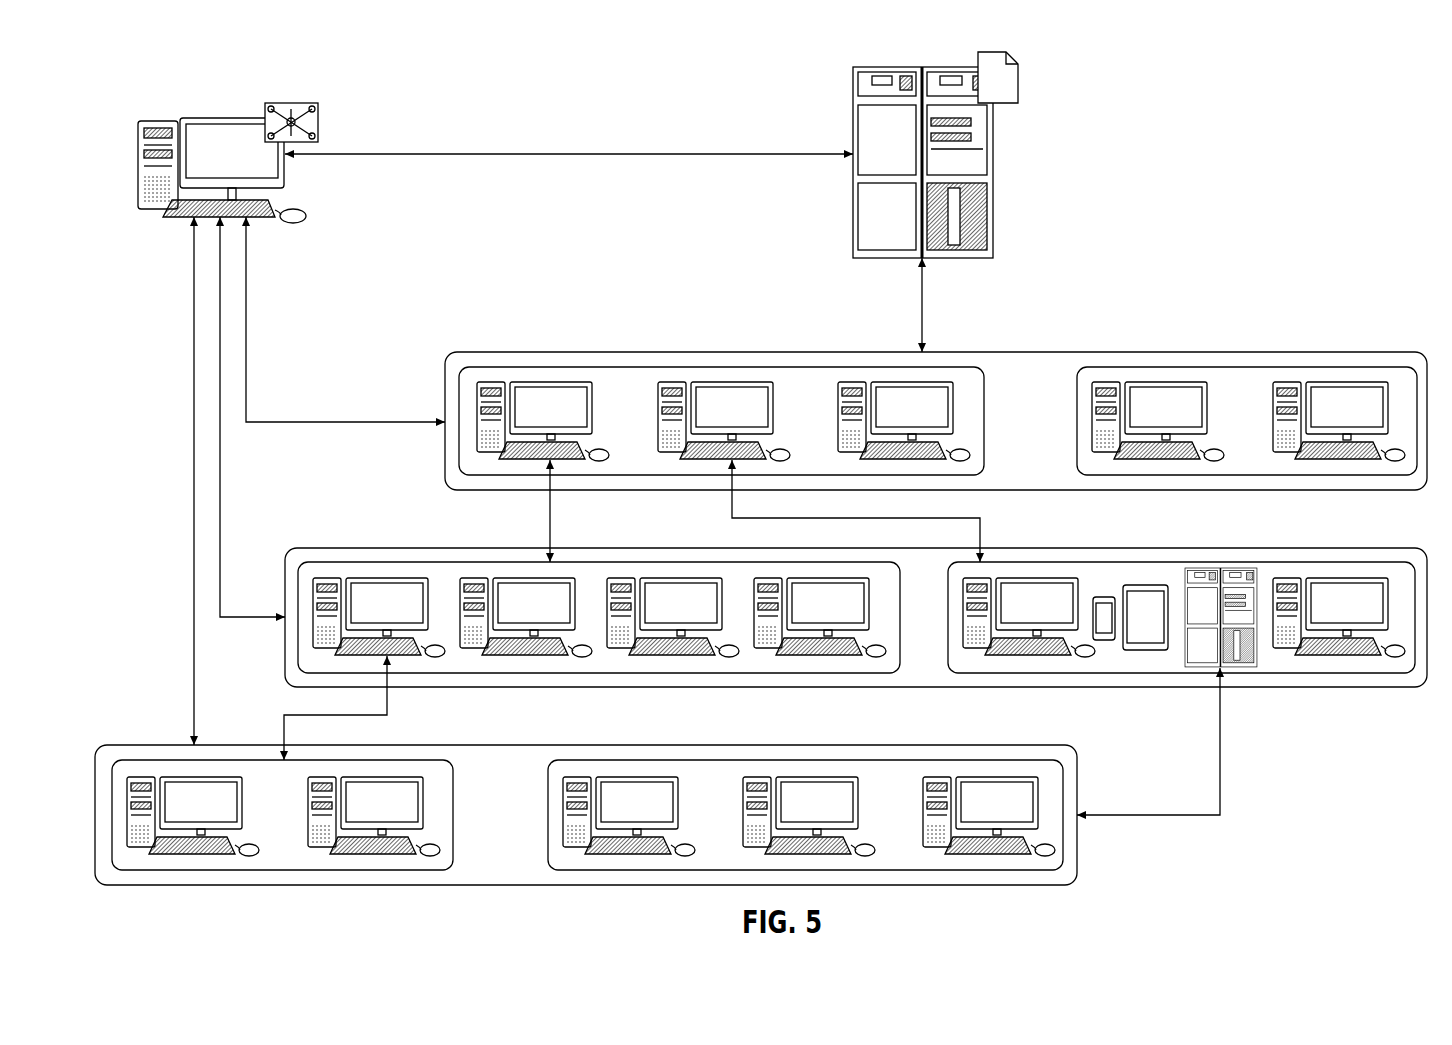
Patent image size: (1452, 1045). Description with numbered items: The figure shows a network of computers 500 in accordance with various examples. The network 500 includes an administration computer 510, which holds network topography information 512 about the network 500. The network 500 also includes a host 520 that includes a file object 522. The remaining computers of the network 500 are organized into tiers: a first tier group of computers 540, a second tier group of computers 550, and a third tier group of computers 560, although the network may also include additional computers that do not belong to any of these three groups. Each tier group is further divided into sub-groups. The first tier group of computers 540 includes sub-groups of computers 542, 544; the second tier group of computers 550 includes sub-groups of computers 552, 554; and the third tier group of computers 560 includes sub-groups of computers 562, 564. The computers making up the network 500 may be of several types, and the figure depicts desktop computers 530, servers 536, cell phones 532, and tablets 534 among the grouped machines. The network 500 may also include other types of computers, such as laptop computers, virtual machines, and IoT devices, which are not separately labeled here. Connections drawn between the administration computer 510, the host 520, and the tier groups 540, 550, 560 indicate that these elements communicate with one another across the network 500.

The network of computers 500 is at (170, 45).
The administration computer 510 is at (160, 121).
The network topography information 512 is at (322, 118).
The host 520 is at (853, 78).
The file object 522 is at (1020, 84).
The desktop computers 530 is at (552, 382).
The cell phones 532 is at (1102, 597).
The tablets 534 is at (1146, 585).
The servers 536 is at (1222, 568).
The first tier group of computers 540 is at (1360, 352).
The sub-group of computers 542 is at (730, 366).
The sub-group of computers 544 is at (1247, 367).
The second tier group of computers 550 is at (1365, 548).
The sub-group of computers 552 is at (445, 562).
The sub-group of computers 554 is at (1035, 562).
The third tier group of computers 560 is at (1005, 745).
The sub-group of computers 562 is at (193, 760).
The sub-group of computers 564 is at (803, 760).